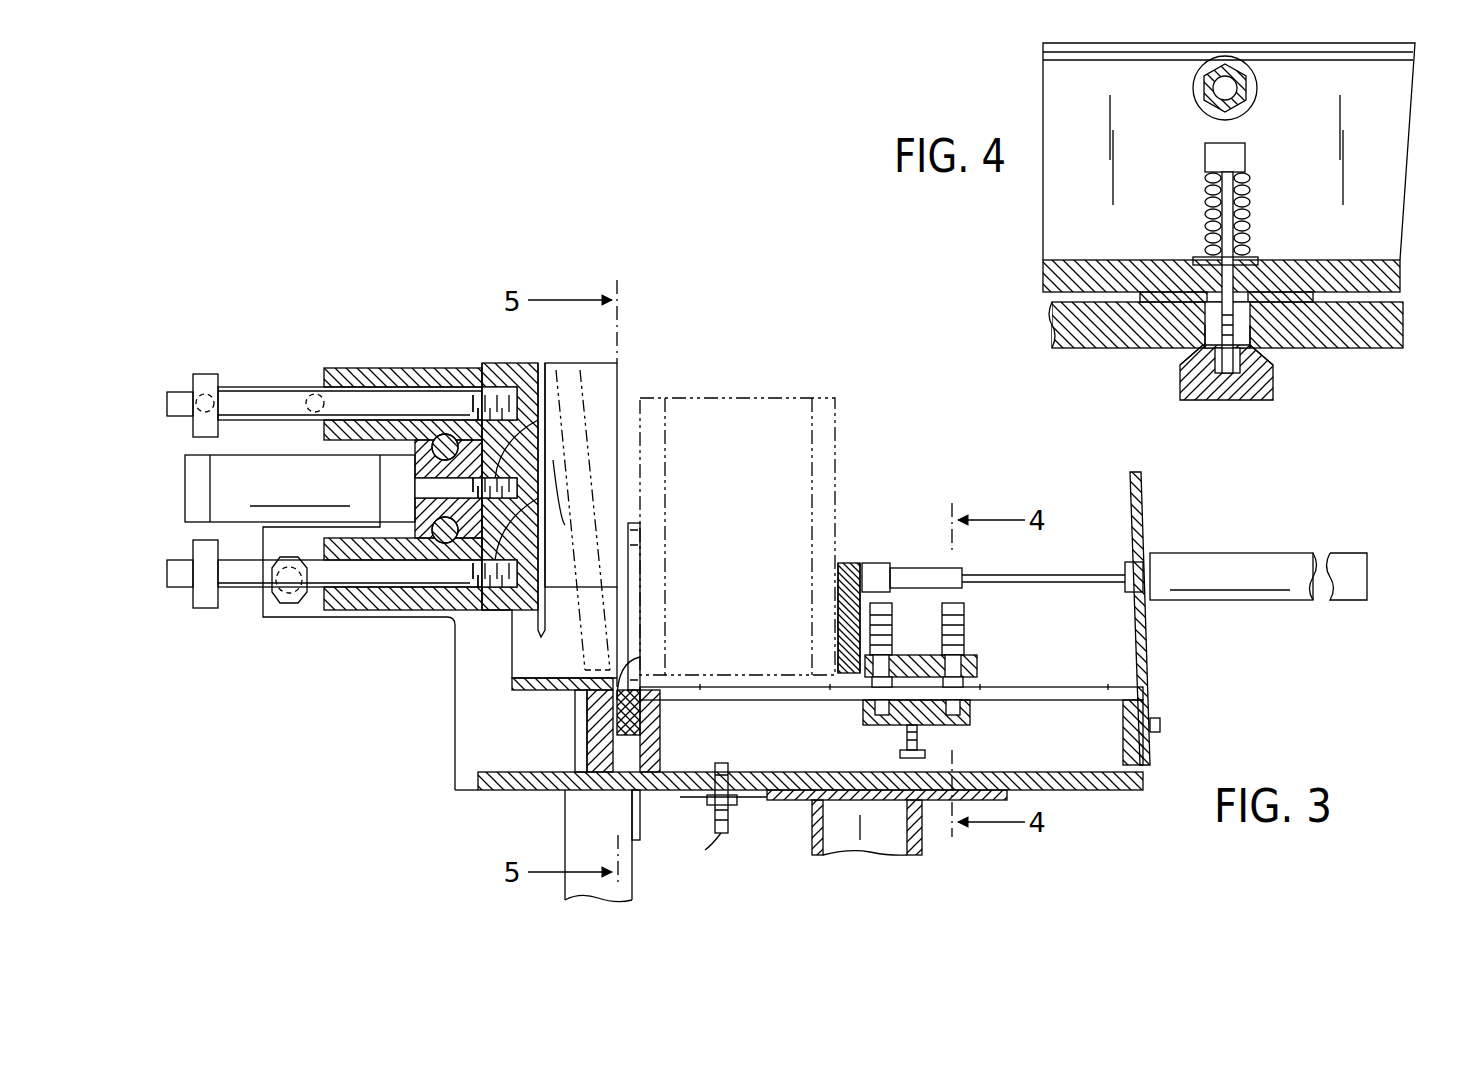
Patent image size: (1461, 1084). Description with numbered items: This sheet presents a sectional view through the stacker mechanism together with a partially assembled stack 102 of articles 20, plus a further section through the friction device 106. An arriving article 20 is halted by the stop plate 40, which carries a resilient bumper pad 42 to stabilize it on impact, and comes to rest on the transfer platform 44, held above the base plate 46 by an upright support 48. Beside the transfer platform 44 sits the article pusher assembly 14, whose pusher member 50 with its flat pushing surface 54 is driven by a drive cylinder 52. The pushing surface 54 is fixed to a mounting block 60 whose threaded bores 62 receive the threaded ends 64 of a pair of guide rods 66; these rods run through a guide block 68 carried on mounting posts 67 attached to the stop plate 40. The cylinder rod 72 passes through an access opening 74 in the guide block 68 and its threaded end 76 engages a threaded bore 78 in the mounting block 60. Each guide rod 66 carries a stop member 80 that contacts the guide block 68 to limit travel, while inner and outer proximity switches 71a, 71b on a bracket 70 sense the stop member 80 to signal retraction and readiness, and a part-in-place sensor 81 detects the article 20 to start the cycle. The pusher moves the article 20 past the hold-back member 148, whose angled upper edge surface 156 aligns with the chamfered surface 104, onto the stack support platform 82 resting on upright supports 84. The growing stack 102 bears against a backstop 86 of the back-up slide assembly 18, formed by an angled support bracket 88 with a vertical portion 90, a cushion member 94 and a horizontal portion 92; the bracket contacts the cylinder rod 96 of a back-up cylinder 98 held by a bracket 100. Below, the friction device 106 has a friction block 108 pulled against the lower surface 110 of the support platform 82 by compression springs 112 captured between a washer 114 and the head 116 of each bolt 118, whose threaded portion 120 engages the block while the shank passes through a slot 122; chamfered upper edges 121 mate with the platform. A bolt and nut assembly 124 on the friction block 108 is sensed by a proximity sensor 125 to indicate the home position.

In FIG. 3, the article pusher assembly 14 is at (318, 622).
In FIG. 3, the back-up slide assembly 18 is at (905, 528).
In FIG. 3, the article 20 is at (565, 372).
In FIG. 3, the stop plate 40 is at (612, 378).
In FIG. 3, the resilient bumper pad 42 is at (520, 648).
In FIG. 3, the transfer platform 44 is at (555, 686).
In FIG. 3, the base plate 46 is at (1075, 790).
In FIG. 3, the upright support 48 is at (582, 748).
In FIG. 3, the pusher member 50 is at (622, 537).
In FIG. 3, the drive cylinder 52 is at (250, 470).
In FIG. 3, the pushing surface 54 is at (553, 462).
In FIG. 3, the mounting block 60 is at (505, 380).
In FIG. 3, the threaded bore 62 is at (488, 385).
In FIG. 3, the threaded end 64 is at (542, 395).
In FIG. 3, the guide rod 66 is at (236, 395).
In FIG. 3, the mounting post 67 is at (445, 434).
In FIG. 3, the guide block 68 is at (340, 368).
In FIG. 3, the bracket 70 is at (272, 387).
In FIG. 3, the inner proximity switch 71a is at (313, 394).
In FIG. 3, the outer proximity switch 71b is at (195, 385).
In FIG. 3, the cylinder rod 72 is at (422, 488).
In FIG. 3, the access opening 74 is at (420, 470).
In FIG. 3, the threaded end 76 is at (520, 500).
In FIG. 3, the threaded bore 78 is at (530, 450).
In FIG. 3, the stop member 80 is at (203, 374).
In FIG. 3, the part-in-place sensor 81 is at (288, 603).
In FIG. 3, the stack support platform 82 is at (752, 700).
In FIG. 4, the stack support platform 82 is at (1395, 325).
In FIG. 3, the upright support 84 is at (662, 722).
In FIG. 3, the backstop 86 is at (848, 557).
In FIG. 3, the angled support bracket 88 is at (865, 560).
In FIG. 3, the vertical portion 90 is at (838, 613).
In FIG. 4, the vertical portion 90 is at (1405, 178).
In FIG. 3, the horizontal portion 92 is at (908, 657).
In FIG. 4, the horizontal portion 92 is at (1395, 272).
In FIG. 3, the cushion member 94 is at (838, 580).
In FIG. 3, the cylinder rod 96 is at (1070, 575).
In FIG. 4, the cylinder rod 96 is at (1242, 88).
In FIG. 3, the back-up cylinder 98 is at (1205, 560).
In FIG. 3, the bracket 100 is at (1148, 632).
In FIG. 3, the stack 102 is at (748, 398).
In FIG. 3, the chamfered surface 104 is at (645, 683).
In FIG. 3, the friction device 106 is at (975, 645).
In FIG. 4, the friction device 106 is at (1268, 195).
In FIG. 3, the friction block 108 is at (866, 715).
In FIG. 4, the friction block 108 is at (1275, 390).
In FIG. 4, the lower surface 110 is at (1098, 350).
In FIG. 4, the compression spring 112 is at (1205, 205).
In FIG. 4, the washer 114 is at (1250, 258).
In FIG. 4, the head 116 is at (1242, 158).
In FIG. 4, the bolt 118 is at (1233, 222).
In FIG. 4, the threaded portion 120 is at (1222, 375).
In FIG. 4, the chamfered upper edge 121 is at (1185, 362).
In FIG. 4, the slot 122 is at (1197, 323).
In FIG. 3, the bolt and nut assembly 124 is at (920, 748).
In FIG. 3, the proximity sensor 125 is at (737, 816).
In FIG. 3, the hold-back member 148 is at (652, 745).
In FIG. 3, the angled upper edge surface 156 is at (622, 680).